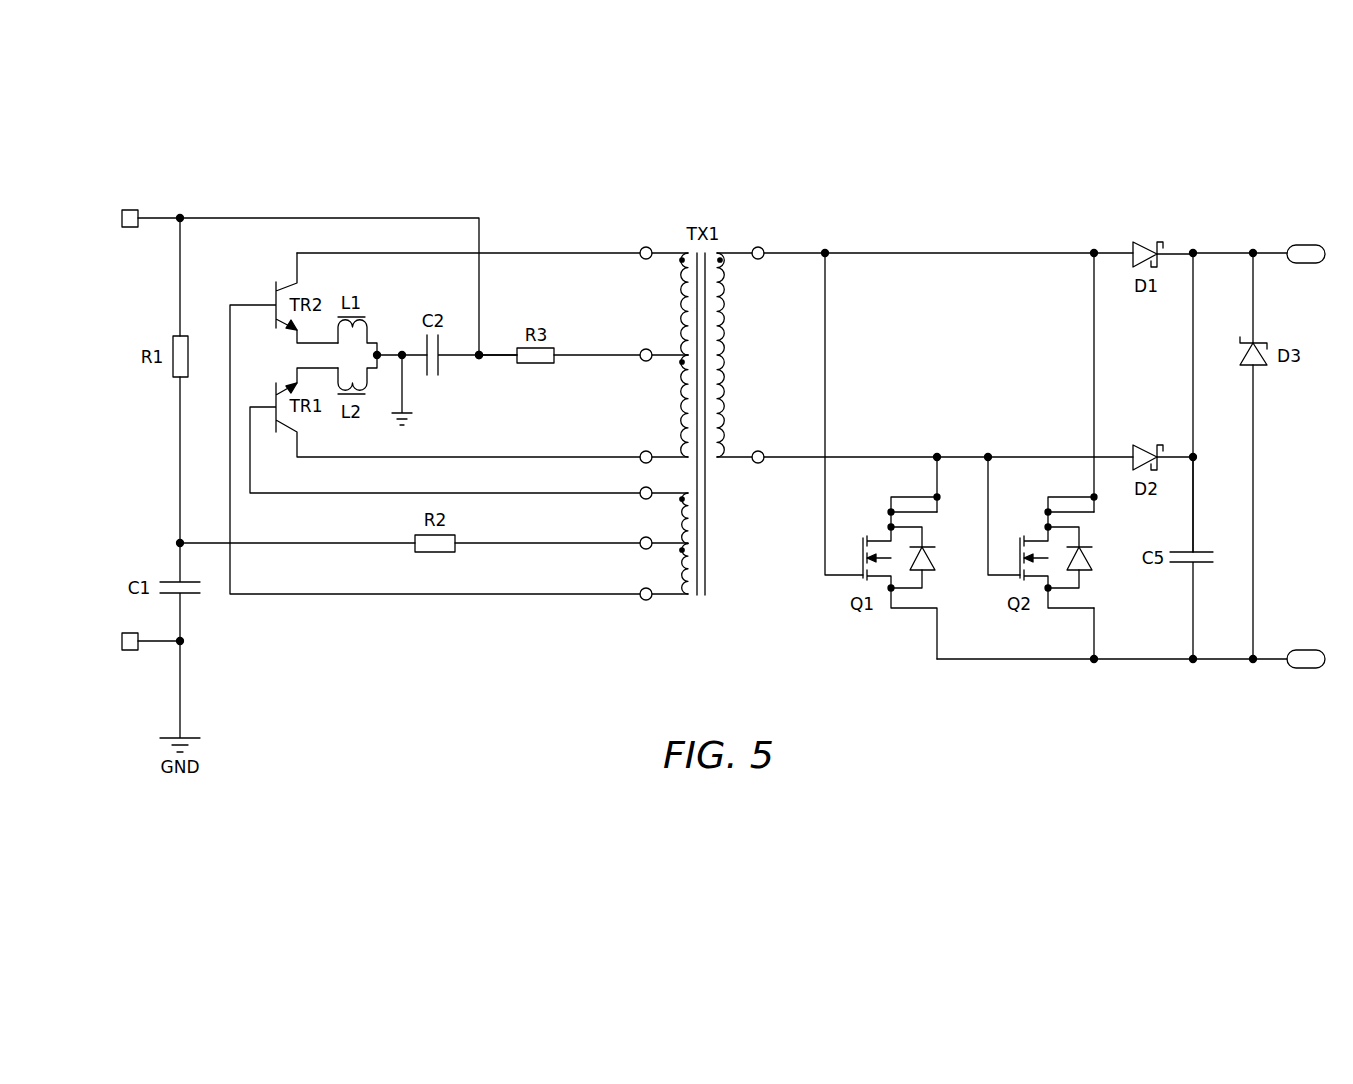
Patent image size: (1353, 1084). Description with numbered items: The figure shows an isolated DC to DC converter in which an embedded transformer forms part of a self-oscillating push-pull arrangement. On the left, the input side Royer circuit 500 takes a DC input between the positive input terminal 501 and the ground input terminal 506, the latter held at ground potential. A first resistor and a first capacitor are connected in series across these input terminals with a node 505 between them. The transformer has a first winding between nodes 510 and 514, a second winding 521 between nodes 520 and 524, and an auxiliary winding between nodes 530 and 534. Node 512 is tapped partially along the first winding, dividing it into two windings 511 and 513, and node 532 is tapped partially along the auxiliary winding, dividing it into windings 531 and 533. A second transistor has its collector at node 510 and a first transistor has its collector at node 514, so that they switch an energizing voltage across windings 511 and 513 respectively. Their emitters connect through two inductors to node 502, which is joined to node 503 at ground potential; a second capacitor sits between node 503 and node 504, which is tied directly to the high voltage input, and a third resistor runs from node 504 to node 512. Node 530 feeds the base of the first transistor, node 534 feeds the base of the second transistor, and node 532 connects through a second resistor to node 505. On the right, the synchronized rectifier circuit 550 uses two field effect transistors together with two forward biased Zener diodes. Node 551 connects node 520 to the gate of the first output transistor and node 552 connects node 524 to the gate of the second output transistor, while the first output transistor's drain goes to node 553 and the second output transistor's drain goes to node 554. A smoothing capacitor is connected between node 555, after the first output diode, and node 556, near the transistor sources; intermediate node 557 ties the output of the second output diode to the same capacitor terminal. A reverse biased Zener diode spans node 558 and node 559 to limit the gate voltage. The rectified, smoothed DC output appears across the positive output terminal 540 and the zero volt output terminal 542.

The input side Royer circuit 500 is at (411, 186).
The input terminal +V 501 is at (130, 228).
The node 502 is at (379, 352).
The node 503 is at (403, 360).
The node 504 is at (479, 361).
The node 505 is at (178, 543).
The input terminal GND 506 is at (130, 651).
The node 510 is at (646, 247).
The winding 511 is at (680, 288).
The node 512 is at (640, 350).
The winding 513 is at (680, 388).
The node 514 is at (640, 451).
The node 520 is at (758, 247).
The second winding 521 is at (727, 290).
The node 524 is at (758, 451).
The node 530 is at (640, 488).
The winding 531 is at (690, 514).
The node 532 is at (640, 539).
The winding 533 is at (690, 565).
The node 534 is at (646, 601).
The output terminal +Vout 540 is at (1305, 264).
The output terminal 0V 542 is at (1305, 669).
The synchronized rectifier circuit 550 is at (1045, 168).
The node 551 is at (826, 247).
The node 552 is at (988, 451).
The node 553 is at (937, 451).
The node 554 is at (1094, 247).
The node 555 is at (1194, 247).
The node 556 is at (1193, 663).
The intermediate node 557 is at (1197, 457).
The node 558 is at (1254, 247).
The node 559 is at (1253, 663).